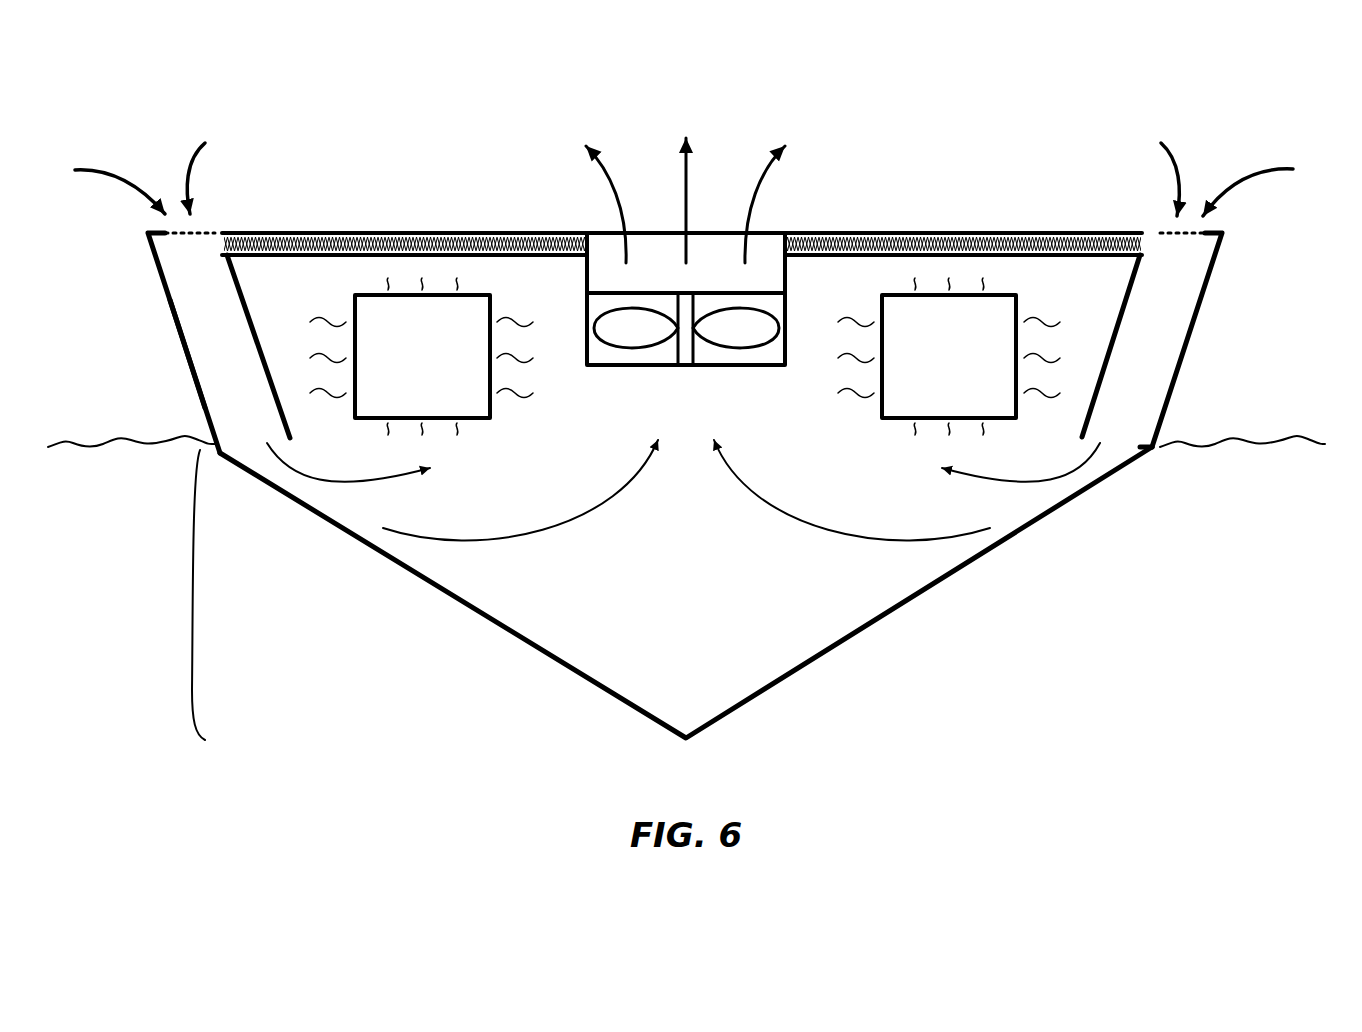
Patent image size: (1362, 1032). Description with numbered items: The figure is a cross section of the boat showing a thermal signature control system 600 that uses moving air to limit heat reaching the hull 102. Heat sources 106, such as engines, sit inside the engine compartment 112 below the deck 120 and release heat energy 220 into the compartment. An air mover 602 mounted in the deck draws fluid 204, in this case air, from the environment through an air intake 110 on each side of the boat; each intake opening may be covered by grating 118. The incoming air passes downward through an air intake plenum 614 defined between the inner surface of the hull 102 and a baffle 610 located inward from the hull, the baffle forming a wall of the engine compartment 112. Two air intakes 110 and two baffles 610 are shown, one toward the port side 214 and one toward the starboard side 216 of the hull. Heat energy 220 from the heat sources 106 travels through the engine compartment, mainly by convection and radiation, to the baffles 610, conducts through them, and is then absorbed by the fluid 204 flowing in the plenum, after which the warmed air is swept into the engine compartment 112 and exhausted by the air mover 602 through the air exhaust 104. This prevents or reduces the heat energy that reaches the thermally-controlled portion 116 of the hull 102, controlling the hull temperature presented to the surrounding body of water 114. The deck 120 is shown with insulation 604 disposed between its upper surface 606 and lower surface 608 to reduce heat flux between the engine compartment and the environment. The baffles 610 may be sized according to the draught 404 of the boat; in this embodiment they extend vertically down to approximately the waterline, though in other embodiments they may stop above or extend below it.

The hull 102 is at (908, 603).
The air exhaust 104 is at (708, 250).
The heat source 106 is at (685, 356).
The air intake 110 is at (160, 176).
The engine compartment 112 is at (683, 498).
The body of water 114 is at (1121, 643).
The thermally-controlled portion of the hull 116 is at (148, 252).
The grating 118 is at (165, 230).
The deck 120 is at (345, 232).
The fluid 204 is at (222, 420).
The port side 214 is at (196, 386).
The starboard side 216 is at (1160, 448).
The heat energy 220 is at (288, 292).
The draught 404 is at (192, 592).
The thermal signature control system 600 is at (852, 165).
The air mover 602 is at (641, 327).
The insulation 604 is at (1068, 230).
The upper surface of the deck 606 is at (928, 232).
The lower surface of the deck 608 is at (1020, 255).
The baffle 610 is at (258, 342).
The air intake plenum 614 is at (182, 311).